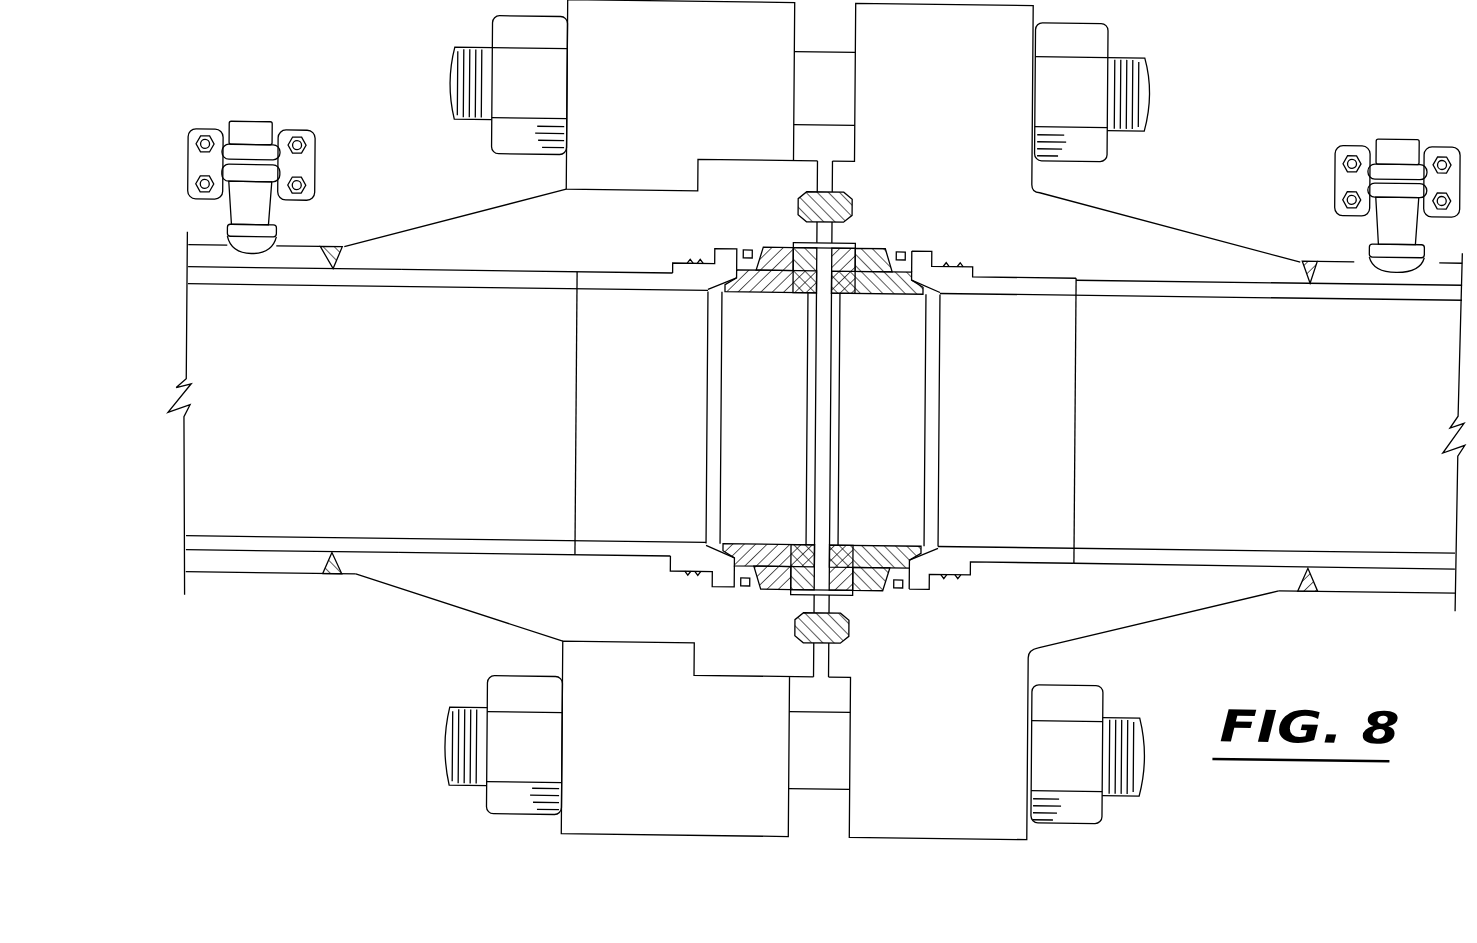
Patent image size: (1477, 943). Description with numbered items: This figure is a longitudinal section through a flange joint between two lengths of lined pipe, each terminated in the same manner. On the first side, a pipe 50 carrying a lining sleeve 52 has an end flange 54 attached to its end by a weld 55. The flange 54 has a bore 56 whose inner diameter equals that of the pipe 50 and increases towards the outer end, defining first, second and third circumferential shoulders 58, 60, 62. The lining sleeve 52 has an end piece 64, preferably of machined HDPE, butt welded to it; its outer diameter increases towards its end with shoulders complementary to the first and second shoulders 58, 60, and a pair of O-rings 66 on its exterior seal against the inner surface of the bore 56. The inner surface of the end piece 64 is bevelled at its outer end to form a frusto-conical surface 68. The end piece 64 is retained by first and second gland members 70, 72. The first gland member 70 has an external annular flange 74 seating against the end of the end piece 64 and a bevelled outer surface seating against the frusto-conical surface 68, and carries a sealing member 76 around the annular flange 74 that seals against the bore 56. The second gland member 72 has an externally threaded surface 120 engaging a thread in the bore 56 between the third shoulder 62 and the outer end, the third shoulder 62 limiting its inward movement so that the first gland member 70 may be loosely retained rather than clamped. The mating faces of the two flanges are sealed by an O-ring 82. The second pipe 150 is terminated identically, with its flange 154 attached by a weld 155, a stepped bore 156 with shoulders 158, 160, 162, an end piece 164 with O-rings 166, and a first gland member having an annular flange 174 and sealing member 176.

The pipe 50 is at (262, 559).
The lining sleeve 52 is at (255, 543).
The end flange 54 is at (472, 818).
The weld 55 is at (331, 581).
The bore 56 is at (522, 276).
The first circumferential shoulder 58 is at (667, 574).
The second circumferential shoulder 60 is at (706, 574).
The third circumferential shoulder 62 is at (762, 591).
The end piece 64 is at (617, 293).
The O-rings 66 is at (699, 264).
The frusto-conical surface 68 is at (700, 293).
The first gland member 70 is at (768, 545).
The second gland member 72 is at (776, 283).
The annular flange 74 is at (746, 250).
The sealing member 76 is at (745, 590).
The O-ring 82 is at (850, 199).
The externally threaded surface 120 is at (753, 249).
The second pipe 150 is at (1389, 588).
The end flange of second pipe 154 is at (1111, 829).
The weld of second pipe 155 is at (1305, 587).
The bore of second flange 156 is at (1132, 279).
The first circumferential shoulder of second flange 158 is at (977, 575).
The second circumferential shoulder of second flange 160 is at (932, 590).
The third circumferential shoulder of second flange 162 is at (897, 603).
The end piece of second pipe 164 is at (1003, 294).
The O-rings of second end piece 166 is at (959, 264).
The annular flange of second first gland member 174 is at (918, 251).
The sealing member of second first gland member 176 is at (898, 590).